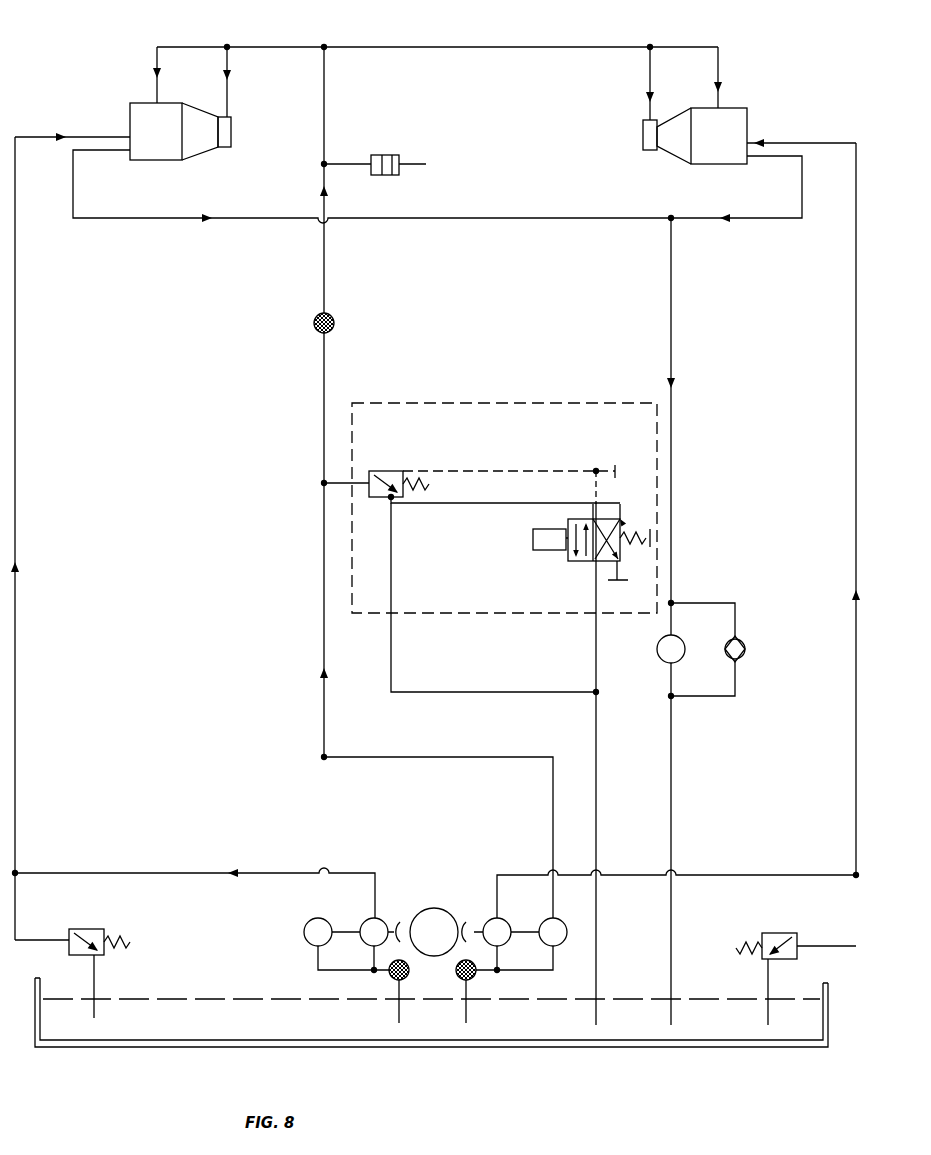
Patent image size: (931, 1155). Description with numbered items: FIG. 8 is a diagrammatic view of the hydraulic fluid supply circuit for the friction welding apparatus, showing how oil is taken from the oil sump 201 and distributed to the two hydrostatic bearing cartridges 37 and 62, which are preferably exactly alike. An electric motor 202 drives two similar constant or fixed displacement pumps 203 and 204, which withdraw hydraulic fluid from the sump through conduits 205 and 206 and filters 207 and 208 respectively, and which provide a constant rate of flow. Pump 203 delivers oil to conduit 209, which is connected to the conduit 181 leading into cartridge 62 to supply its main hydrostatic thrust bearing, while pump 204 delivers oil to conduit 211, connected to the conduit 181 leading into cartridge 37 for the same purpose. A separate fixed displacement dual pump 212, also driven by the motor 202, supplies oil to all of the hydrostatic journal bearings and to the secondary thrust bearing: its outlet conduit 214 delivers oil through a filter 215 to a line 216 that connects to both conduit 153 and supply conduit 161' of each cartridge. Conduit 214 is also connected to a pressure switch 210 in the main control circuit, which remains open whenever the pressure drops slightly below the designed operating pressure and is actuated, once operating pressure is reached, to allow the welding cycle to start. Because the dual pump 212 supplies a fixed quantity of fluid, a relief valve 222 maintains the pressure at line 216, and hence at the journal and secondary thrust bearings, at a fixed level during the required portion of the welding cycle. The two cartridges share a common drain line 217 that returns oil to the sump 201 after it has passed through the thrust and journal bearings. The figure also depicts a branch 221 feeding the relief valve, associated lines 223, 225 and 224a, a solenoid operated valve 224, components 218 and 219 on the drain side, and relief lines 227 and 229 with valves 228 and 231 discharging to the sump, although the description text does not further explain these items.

The line 216 is at (410, 47).
The supply conduit 161' is at (464, 77).
The conduit 153 is at (227, 88).
The conduit 181 is at (80, 137).
The cartridge 62 is at (158, 150).
The cartridge 37 is at (722, 157).
The pressure switch 210 is at (380, 176).
The common drain line 217 is at (498, 218).
The filter 215 is at (332, 314).
The outlet conduit 214 is at (324, 735).
The branch line 221 is at (335, 485).
The relief valve 222 is at (402, 471).
The pilot line 224a is at (490, 471).
The line 223 is at (518, 503).
The line 225 is at (391, 668).
The solenoid operated valve 224 is at (610, 561).
The heat exchanger 218 is at (658, 660).
The valve 219 is at (742, 642).
The conduit 209 is at (176, 873).
The conduit 211 is at (735, 875).
The dual pump 212 is at (326, 918).
The pump 203 is at (380, 918).
The electric motor 202 is at (440, 908).
The pump 204 is at (505, 920).
The filter 207 is at (389, 974).
The filter 208 is at (476, 976).
The conduit 205 is at (399, 1010).
The conduit 206 is at (466, 1010).
The relief line 227 is at (15, 912).
The relief valve 228 is at (86, 929).
The relief line 229 is at (856, 910).
The relief valve 231 is at (762, 960).
The oil sump 201 is at (565, 1040).